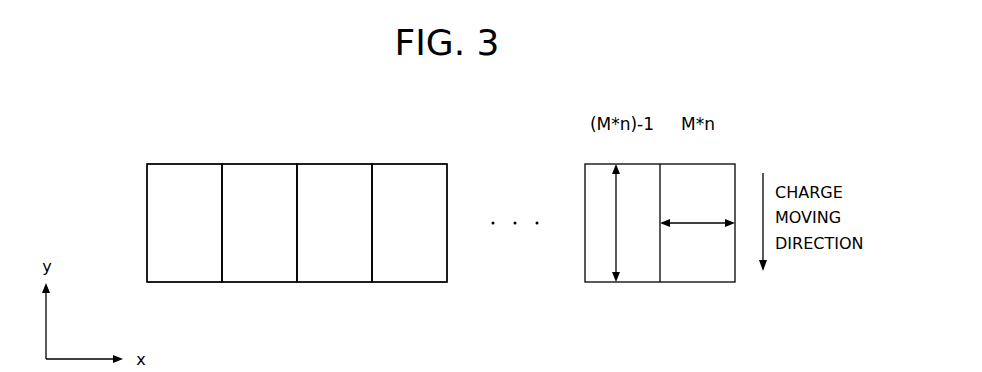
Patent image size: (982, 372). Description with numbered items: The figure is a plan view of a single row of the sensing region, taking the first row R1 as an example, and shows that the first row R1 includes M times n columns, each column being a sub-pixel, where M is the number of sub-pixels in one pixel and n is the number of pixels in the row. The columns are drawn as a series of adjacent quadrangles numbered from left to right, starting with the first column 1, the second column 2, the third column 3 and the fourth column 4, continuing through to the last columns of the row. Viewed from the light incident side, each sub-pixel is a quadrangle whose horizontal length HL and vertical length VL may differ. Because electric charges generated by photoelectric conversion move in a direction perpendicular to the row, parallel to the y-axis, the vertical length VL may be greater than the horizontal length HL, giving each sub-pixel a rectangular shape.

The first row R1 is at (138, 167).
The first column 1 is at (184, 198).
The second column 2 is at (259, 198).
The third column 3 is at (334, 198).
The fourth column 4 is at (409, 198).
The vertical length VL is at (629, 223).
The horizontal length HL is at (697, 212).